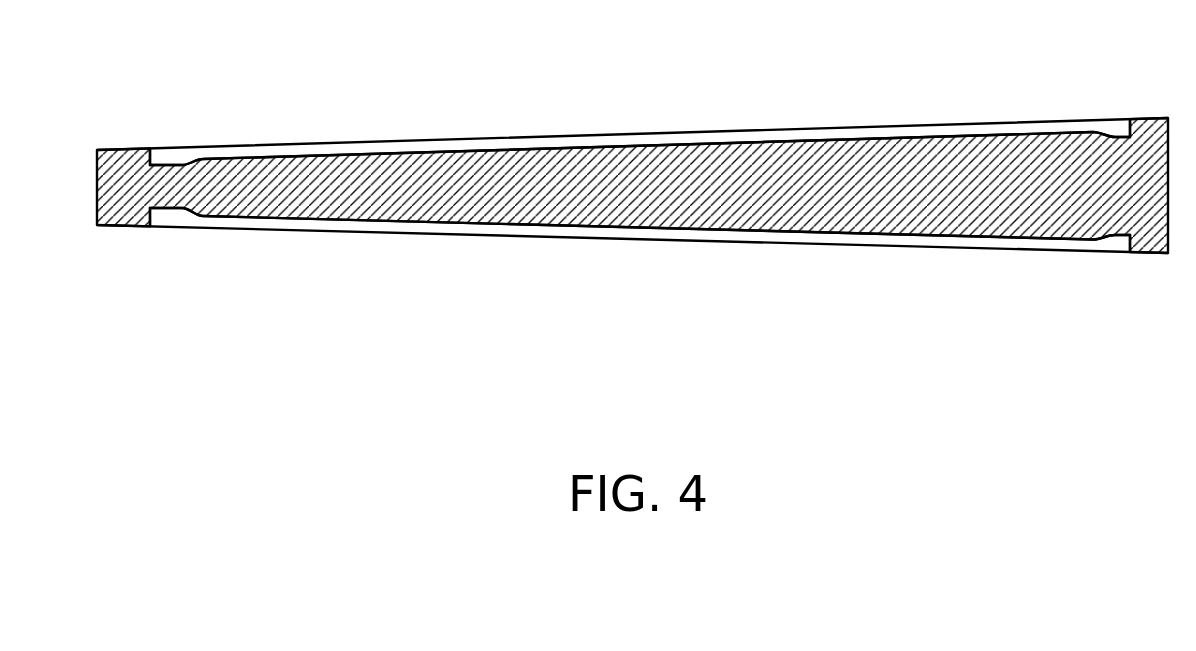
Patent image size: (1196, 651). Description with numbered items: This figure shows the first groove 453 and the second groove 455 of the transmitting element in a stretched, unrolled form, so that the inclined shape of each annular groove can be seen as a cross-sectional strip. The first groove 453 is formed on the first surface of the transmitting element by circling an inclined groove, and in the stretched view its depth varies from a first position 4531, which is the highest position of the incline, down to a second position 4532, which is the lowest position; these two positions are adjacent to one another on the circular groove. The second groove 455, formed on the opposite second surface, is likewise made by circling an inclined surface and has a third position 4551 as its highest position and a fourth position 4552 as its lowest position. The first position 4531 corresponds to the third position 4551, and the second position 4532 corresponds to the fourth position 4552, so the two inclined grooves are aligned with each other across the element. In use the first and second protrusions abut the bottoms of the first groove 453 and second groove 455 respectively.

The first groove 453 is at (577, 138).
The second groove 455 is at (577, 235).
The first position 4531 is at (1113, 137).
The second position 4532 is at (171, 165).
The third position 4551 is at (1118, 235).
The fourth position 4552 is at (171, 208).